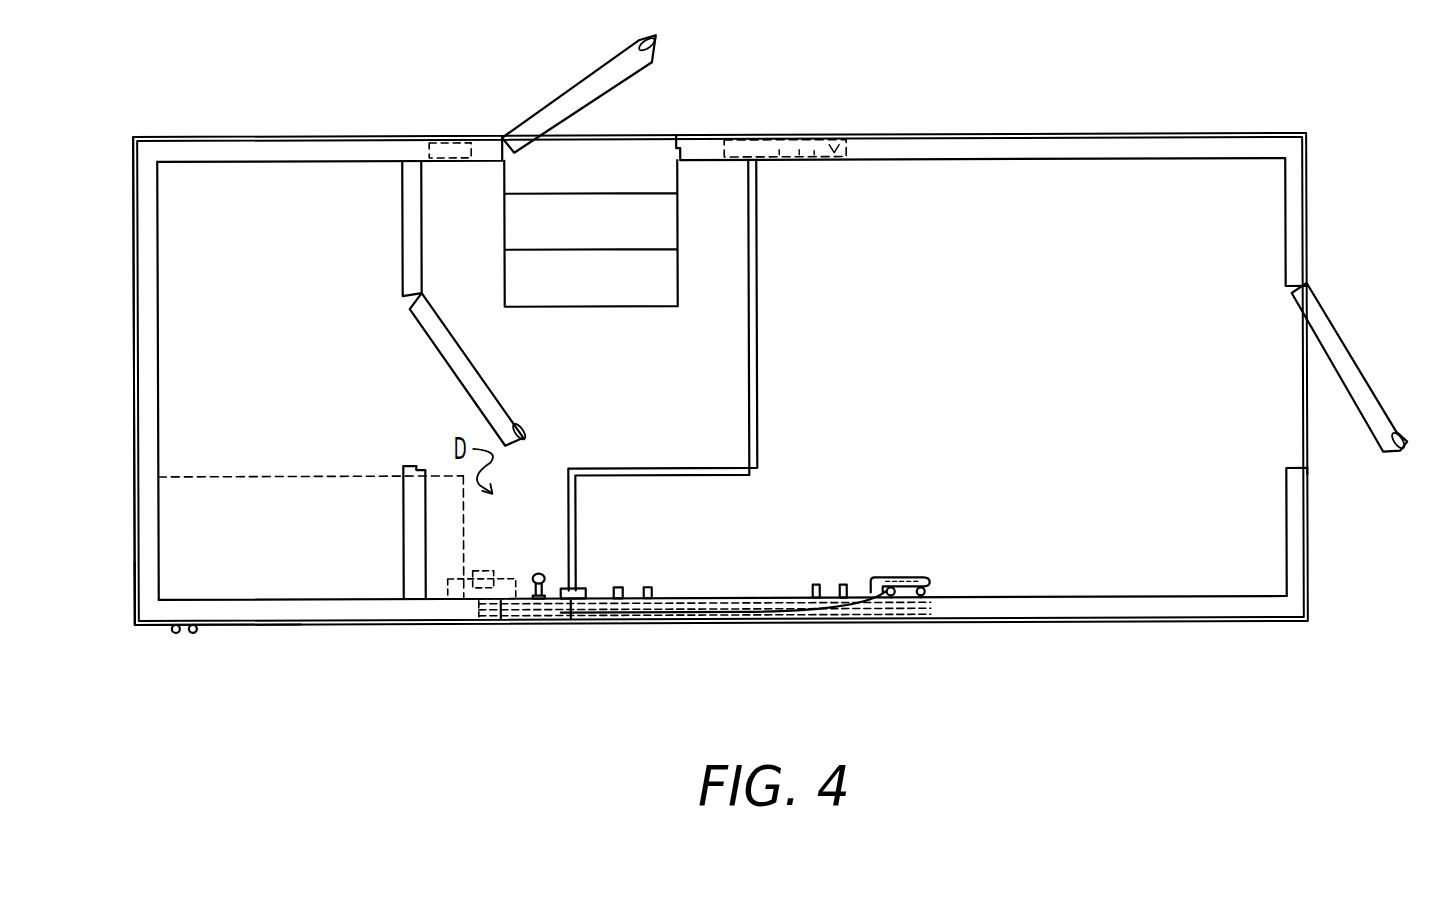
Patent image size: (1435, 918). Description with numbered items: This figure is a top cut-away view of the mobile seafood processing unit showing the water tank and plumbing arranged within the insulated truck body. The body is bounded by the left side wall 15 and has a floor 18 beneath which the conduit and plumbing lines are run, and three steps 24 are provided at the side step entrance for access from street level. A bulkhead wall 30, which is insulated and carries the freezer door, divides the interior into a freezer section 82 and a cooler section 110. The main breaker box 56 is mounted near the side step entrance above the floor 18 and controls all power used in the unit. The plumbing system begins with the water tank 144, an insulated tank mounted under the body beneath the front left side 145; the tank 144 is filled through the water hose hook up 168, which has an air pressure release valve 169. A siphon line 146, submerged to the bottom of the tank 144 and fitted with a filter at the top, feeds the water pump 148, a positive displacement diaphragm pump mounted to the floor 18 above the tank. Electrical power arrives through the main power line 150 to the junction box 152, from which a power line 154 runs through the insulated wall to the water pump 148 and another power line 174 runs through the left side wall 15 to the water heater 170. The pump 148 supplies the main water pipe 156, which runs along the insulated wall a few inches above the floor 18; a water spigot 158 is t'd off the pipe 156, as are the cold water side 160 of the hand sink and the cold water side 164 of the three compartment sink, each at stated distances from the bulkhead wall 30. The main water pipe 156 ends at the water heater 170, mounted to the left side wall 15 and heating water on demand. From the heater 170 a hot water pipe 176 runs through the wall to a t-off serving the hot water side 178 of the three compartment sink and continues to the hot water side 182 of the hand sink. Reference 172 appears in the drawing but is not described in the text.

The left side wall 15 is at (1067, 610).
The floor 18 is at (638, 378).
The steps 24 is at (566, 183).
The bulkhead wall 30 is at (405, 182).
The main breaker box 56 is at (766, 142).
The freezer section 82 is at (178, 410).
The cooler section 110 is at (1137, 568).
The water tank 144 is at (333, 563).
The front left side 145 is at (160, 627).
The siphon line 146 is at (458, 605).
The water pump 148 is at (480, 570).
The main power line 150 is at (577, 572).
The junction box 152 is at (570, 600).
The power line 154 is at (488, 625).
The main water pipe 156 is at (500, 623).
The water spigot 158 is at (538, 572).
The cold water side of hand sink 160 is at (617, 587).
The cold water side of three compartment sink 164 is at (815, 585).
The water hose hook up 168 is at (175, 632).
The air pressure release valve 169 is at (192, 632).
The water heater 170 is at (913, 578).
The drain connector 172 is at (923, 597).
The power line 174 is at (890, 597).
The hot water pipe 176 is at (717, 603).
The hot water side of three compartment sink 178 is at (843, 585).
The hot water side of hand sink 182 is at (647, 587).